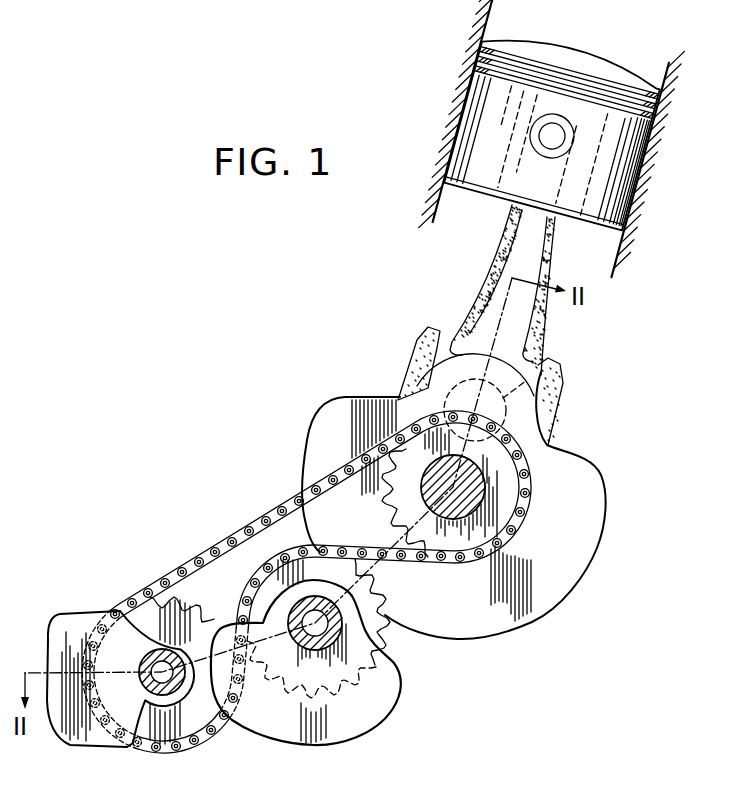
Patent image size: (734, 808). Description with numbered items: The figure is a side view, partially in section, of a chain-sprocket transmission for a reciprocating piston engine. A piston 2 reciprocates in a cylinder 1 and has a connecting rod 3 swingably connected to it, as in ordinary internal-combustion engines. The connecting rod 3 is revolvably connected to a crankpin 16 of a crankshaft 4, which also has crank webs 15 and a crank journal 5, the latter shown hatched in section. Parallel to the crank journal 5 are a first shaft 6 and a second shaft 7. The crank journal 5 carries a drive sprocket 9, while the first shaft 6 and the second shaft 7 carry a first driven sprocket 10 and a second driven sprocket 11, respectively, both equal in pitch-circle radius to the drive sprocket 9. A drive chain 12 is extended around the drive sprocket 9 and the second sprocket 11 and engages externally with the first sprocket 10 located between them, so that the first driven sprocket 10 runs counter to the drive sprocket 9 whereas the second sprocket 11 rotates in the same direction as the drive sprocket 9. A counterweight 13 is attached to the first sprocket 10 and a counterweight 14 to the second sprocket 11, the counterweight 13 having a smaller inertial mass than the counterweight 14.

The cylinder 1 is at (438, 208).
The piston 2 is at (520, 97).
The connecting rod 3 is at (548, 256).
The crankshaft 4 is at (548, 410).
The crank journal 5 is at (487, 495).
The first shaft 6 is at (307, 644).
The second shaft 7 is at (141, 661).
The drive sprocket 9 is at (380, 508).
The first driven sprocket 10 is at (382, 658).
The second driven sprocket 11 is at (219, 627).
The drive chain 12 is at (262, 517).
The counterweight 13 is at (283, 731).
The counterweight 14 is at (88, 615).
The crank web 15 is at (425, 388).
The crankpin 16 is at (566, 350).